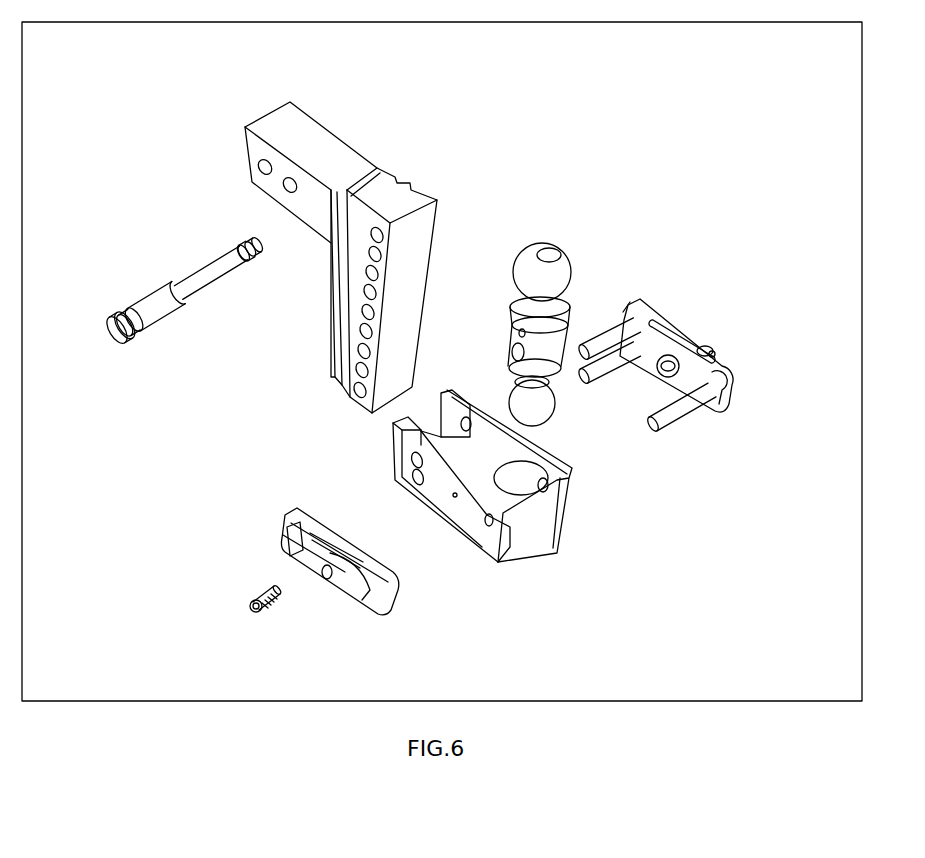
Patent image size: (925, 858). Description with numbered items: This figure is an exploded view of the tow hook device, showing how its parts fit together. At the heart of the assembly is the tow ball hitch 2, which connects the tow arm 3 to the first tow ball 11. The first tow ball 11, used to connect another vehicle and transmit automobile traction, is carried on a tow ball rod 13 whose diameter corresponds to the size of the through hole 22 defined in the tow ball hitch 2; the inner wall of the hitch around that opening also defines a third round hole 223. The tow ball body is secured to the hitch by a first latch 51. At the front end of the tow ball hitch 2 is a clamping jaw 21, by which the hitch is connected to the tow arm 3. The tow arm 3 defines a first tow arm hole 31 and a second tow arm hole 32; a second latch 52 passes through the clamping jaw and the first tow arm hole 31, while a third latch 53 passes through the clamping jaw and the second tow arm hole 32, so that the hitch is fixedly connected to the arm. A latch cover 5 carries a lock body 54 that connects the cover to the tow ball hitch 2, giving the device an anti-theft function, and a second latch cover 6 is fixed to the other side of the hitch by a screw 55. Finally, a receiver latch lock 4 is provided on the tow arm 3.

The tow ball hitch 2 is at (537, 528).
The clamping jaw 21 is at (440, 447).
The through hole 22 is at (493, 542).
The third round hole 223 is at (520, 478).
The tow arm 3 is at (373, 218).
The first tow arm hole 31 is at (363, 315).
The second tow arm hole 32 is at (367, 331).
The receiver latch lock 4 is at (117, 338).
The latch cover 5 is at (712, 325).
The first latch 51 is at (664, 426).
The second latch 52 is at (641, 301).
The third latch 53 is at (597, 381).
The lock body 54 is at (727, 400).
The screw 55 is at (252, 600).
The latch cover 6 is at (360, 600).
The first tow ball 11 is at (538, 303).
The tow ball rod 13 is at (523, 335).